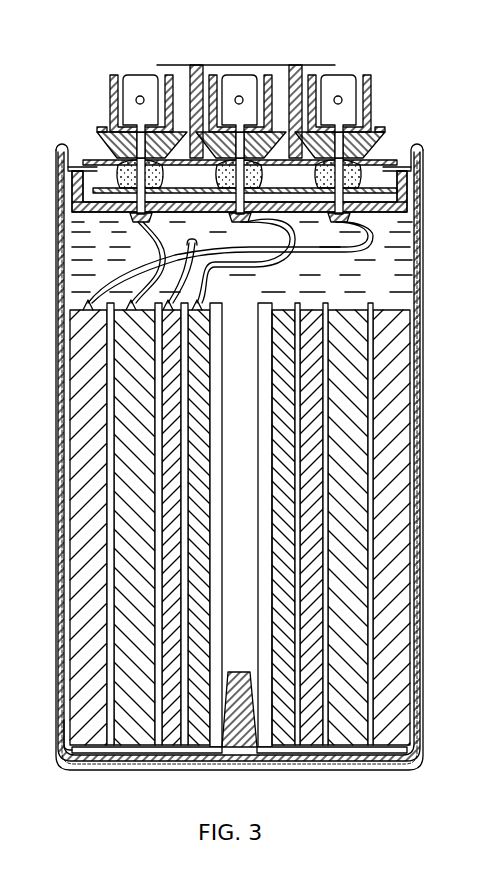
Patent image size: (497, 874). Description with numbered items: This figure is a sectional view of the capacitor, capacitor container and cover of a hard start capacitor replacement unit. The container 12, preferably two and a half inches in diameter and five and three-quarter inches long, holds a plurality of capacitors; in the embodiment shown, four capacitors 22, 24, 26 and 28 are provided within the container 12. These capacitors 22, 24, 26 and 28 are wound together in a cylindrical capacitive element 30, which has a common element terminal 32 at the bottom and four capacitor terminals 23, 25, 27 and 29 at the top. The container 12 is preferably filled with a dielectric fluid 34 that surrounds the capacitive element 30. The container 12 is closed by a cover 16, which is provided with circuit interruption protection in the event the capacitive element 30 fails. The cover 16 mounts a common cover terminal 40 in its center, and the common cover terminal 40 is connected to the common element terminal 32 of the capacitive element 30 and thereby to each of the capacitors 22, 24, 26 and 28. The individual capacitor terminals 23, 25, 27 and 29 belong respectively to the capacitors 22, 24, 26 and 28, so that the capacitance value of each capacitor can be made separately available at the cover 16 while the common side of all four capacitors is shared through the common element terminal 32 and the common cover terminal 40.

The container 12 is at (421, 465).
The cover 16 is at (90, 153).
The capacitor 22 is at (193, 738).
The capacitor terminal 23 is at (218, 320).
The capacitor 24 is at (167, 742).
The capacitor terminal 25 is at (170, 312).
The capacitor 26 is at (357, 675).
The capacitor terminal 27 is at (123, 273).
The capacitor 28 is at (398, 613).
The capacitor terminal 29 is at (83, 297).
The cylindrical capacitive element 30 is at (414, 353).
The common element terminal 32 is at (357, 750).
The dielectric fluid 34 is at (378, 267).
The common cover terminal 40 is at (240, 80).